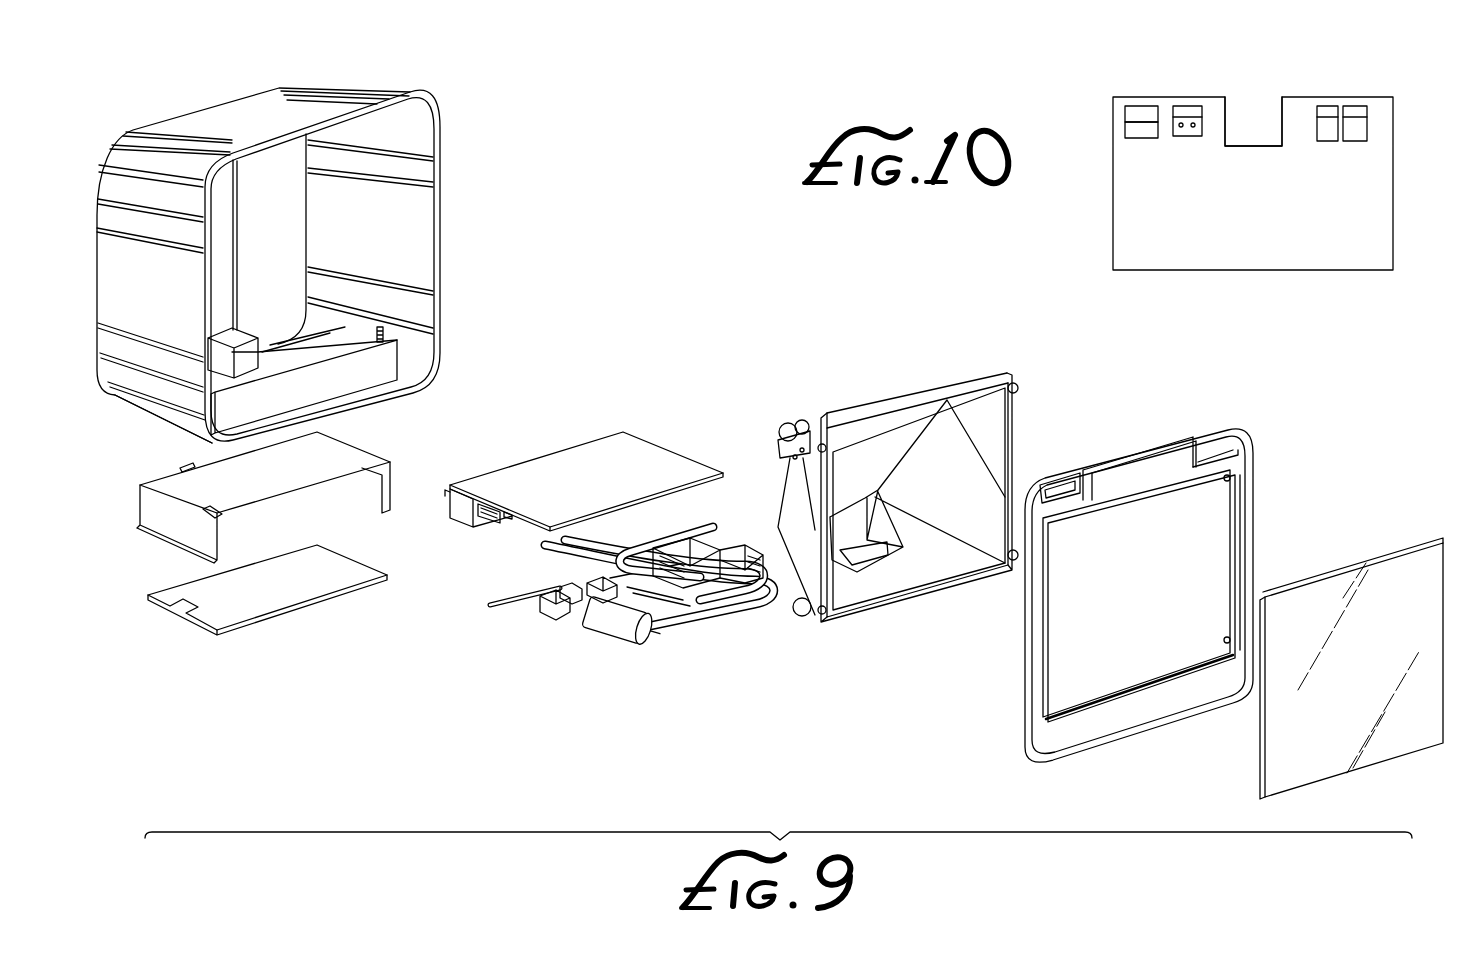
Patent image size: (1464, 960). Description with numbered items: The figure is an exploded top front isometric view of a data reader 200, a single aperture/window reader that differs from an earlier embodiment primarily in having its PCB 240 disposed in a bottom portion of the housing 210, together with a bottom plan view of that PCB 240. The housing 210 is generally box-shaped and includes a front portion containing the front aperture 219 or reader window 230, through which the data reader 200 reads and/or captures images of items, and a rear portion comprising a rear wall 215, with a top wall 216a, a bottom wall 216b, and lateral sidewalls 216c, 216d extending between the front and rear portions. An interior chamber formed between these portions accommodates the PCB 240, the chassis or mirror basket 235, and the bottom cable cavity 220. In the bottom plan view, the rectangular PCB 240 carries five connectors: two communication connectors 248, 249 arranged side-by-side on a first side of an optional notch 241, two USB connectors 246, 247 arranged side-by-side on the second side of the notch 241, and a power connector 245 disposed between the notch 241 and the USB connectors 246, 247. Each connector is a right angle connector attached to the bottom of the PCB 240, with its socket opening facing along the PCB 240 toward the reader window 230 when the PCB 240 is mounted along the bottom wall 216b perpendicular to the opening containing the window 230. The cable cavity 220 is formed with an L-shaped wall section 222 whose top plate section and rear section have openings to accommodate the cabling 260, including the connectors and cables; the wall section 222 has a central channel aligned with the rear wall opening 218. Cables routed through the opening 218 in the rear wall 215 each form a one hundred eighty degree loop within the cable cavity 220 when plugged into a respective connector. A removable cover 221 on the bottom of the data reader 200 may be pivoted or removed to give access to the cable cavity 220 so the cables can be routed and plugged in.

In FIG. 9, the data reader 200 is at (641, 147).
In FIG. 9, the housing 210 is at (345, 82).
In FIG. 9, the rear wall 215 is at (243, 227).
In FIG. 9, the top wall 216a is at (217, 120).
In FIG. 9, the bottom wall 216b is at (160, 420).
In FIG. 9, the lateral sidewall 216c is at (152, 302).
In FIG. 9, the lateral sidewall 216d is at (367, 215).
In FIG. 9, the rear wall opening 218 is at (1247, 458).
In FIG. 9, the front aperture 219 is at (1222, 512).
In FIG. 9, the cable cavity 220 is at (322, 340).
In FIG. 9, the removable cover 221 is at (257, 590).
In FIG. 9, the L-shaped wall section 222 is at (178, 527).
In FIG. 9, the reader window 230 is at (1397, 597).
In FIG. 9, the chassis or mirror basket 235 is at (907, 400).
In FIG. 9, the PCB 240 is at (588, 475).
In FIG. 10, the PCB 240 is at (1167, 223).
In FIG. 10, the notch 241 is at (1230, 123).
In FIG. 10, the power connector 245 is at (1185, 105).
In FIG. 10, the USB connector 246 is at (1125, 130).
In FIG. 10, the USB connector 247 is at (1127, 113).
In FIG. 10, the communication connector 248 is at (1328, 143).
In FIG. 9, the communication connector 249 is at (463, 513).
In FIG. 10, the communication connector 249 is at (1355, 143).
In FIG. 9, the cabling 260 is at (684, 652).